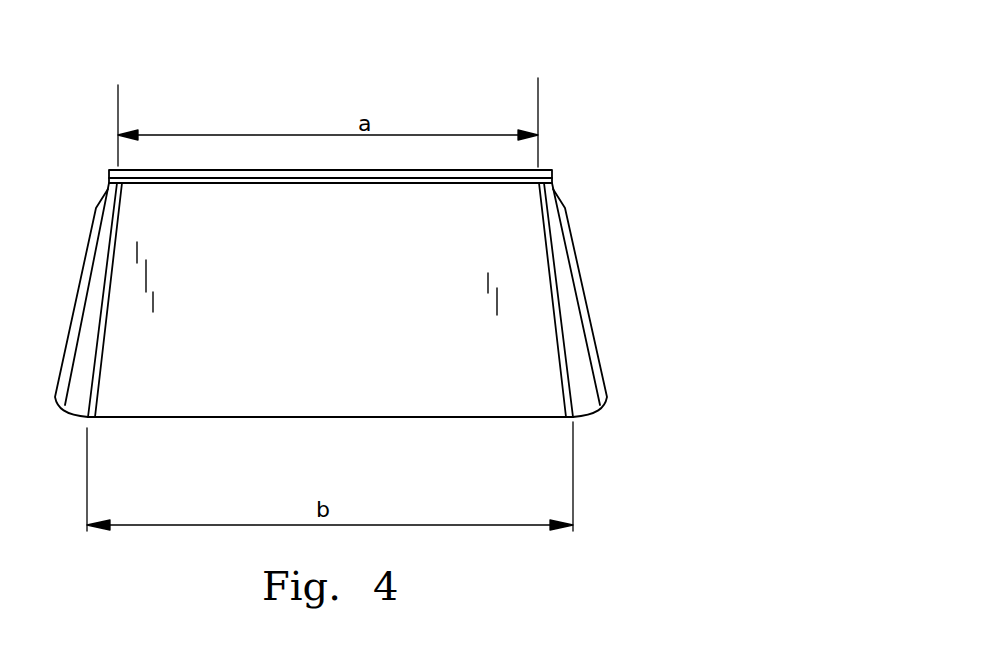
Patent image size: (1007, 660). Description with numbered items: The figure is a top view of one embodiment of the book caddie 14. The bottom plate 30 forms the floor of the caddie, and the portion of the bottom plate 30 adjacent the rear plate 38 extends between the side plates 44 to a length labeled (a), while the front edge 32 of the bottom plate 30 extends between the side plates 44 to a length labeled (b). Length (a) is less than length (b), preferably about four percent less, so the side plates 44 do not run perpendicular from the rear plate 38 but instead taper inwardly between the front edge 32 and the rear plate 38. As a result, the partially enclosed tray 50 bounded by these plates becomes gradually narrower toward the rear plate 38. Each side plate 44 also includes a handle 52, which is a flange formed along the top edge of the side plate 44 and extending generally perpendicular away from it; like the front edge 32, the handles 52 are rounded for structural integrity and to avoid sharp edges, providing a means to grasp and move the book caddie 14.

The book caddie 14 is at (618, 92).
The bottom plate 30 is at (345, 336).
The front edge 32 is at (227, 422).
The rear plate 38 is at (307, 170).
The side plates 44 is at (85, 372).
The partially enclosed tray 50 is at (384, 428).
The handles 52 is at (82, 255).